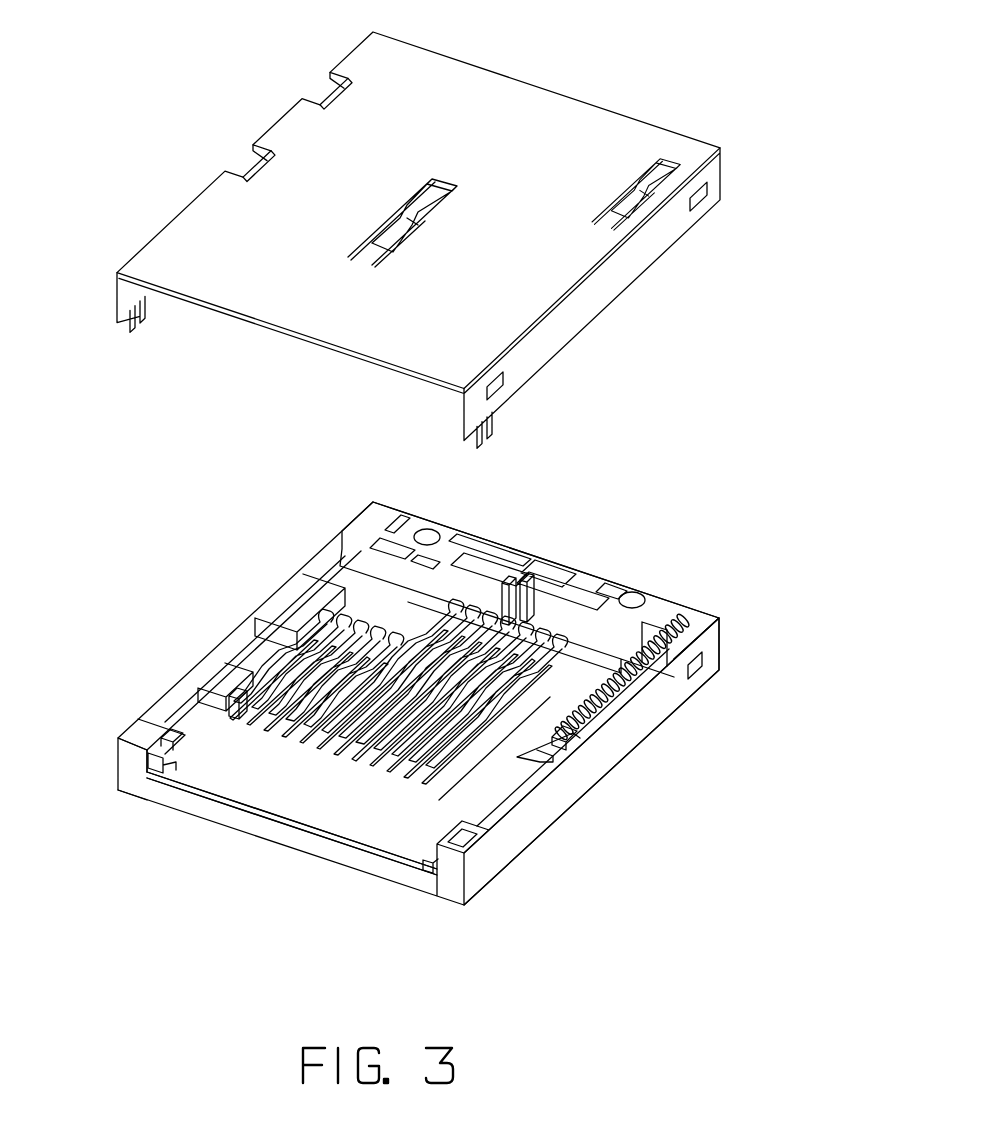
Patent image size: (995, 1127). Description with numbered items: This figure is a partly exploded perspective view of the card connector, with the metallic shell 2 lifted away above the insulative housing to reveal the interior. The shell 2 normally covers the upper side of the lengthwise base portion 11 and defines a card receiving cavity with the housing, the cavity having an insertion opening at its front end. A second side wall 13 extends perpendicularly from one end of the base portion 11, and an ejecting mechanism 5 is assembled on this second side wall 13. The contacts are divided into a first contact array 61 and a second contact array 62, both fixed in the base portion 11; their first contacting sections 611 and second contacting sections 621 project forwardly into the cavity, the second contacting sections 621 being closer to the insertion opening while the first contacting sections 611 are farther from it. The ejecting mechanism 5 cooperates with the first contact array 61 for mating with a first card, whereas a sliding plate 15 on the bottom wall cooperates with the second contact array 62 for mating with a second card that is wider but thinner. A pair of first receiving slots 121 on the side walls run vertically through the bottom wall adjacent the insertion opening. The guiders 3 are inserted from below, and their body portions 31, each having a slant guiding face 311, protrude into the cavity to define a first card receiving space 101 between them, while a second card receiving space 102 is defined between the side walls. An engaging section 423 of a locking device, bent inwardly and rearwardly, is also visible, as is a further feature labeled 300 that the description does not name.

The metallic shell 2 is at (477, 100).
The guiders 3 is at (477, 792).
The ejecting mechanism 5 is at (577, 750).
The base portion 11 is at (480, 547).
The second side wall 13 is at (620, 745).
The sliding plate 15 is at (303, 616).
The body portion 31 is at (227, 728).
The first contact array 61 is at (527, 627).
The second contact array 62 is at (608, 722).
The first card receiving space 101 is at (428, 812).
The second card receiving space 102 is at (240, 715).
The first receiving slots 121 is at (163, 728).
The engaging block 300 is at (233, 708).
The slant guiding face 311 is at (118, 790).
The engaging section 423 is at (152, 755).
The first contacting sections 611 is at (498, 633).
The second contacting sections 621 is at (572, 730).